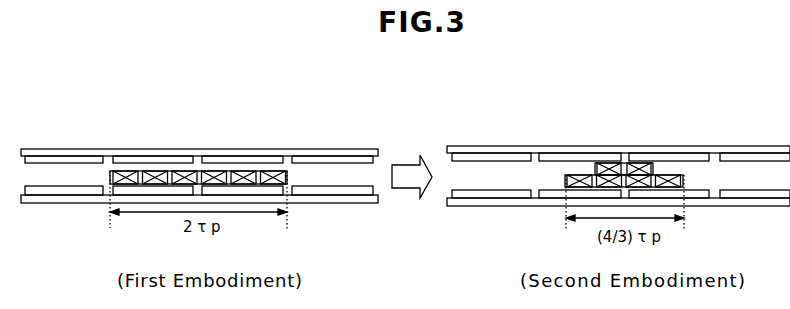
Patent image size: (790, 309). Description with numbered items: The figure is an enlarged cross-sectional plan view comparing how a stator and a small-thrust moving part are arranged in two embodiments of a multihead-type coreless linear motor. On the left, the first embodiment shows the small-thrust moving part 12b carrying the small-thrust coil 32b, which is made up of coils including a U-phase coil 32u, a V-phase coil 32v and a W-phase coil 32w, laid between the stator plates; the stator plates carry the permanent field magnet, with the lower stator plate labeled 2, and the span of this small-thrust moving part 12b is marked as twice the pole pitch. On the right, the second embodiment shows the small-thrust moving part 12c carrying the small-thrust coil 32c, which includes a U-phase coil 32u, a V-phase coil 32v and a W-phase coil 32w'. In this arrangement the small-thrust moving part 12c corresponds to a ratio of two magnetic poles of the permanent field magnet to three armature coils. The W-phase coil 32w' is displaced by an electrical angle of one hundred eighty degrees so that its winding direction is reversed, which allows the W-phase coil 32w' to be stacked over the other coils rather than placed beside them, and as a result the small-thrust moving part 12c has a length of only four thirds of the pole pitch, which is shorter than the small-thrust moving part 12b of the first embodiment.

The field yoke (stator) 2 is at (78, 193).
The small-thrust moving part 12b is at (112, 170).
The small-thrust moving part 12c is at (557, 170).
The small-thrust coil 32b is at (290, 90).
The small-thrust coil 32c is at (713, 80).
The U-phase coil 32u is at (150, 170).
The V-phase coil 32v is at (203, 170).
The W-phase coil 32w is at (280, 138).
The W-phase coil 32w' is at (608, 142).